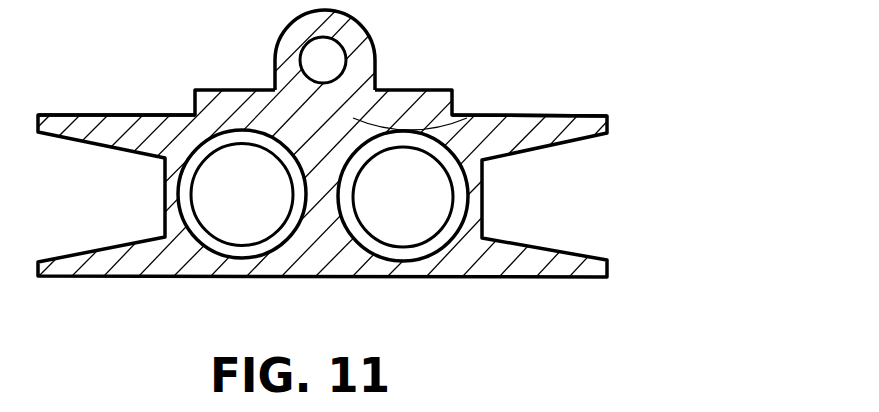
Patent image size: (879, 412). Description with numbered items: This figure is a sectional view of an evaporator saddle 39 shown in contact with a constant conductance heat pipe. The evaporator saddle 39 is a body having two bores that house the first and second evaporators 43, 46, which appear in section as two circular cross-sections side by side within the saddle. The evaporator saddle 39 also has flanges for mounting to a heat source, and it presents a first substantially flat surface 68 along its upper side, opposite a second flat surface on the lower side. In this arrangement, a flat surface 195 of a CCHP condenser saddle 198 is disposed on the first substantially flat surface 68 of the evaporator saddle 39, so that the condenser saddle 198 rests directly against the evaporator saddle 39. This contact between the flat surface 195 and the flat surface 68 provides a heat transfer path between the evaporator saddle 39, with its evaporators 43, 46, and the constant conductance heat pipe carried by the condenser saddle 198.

The evaporator saddle 39 is at (328, 248).
The first evaporator 43 is at (235, 252).
The second evaporator 46 is at (417, 252).
The first substantially flat surface 68 is at (113, 113).
The flat surface 195 is at (483, 117).
The CCHP condenser saddle 198 is at (373, 33).